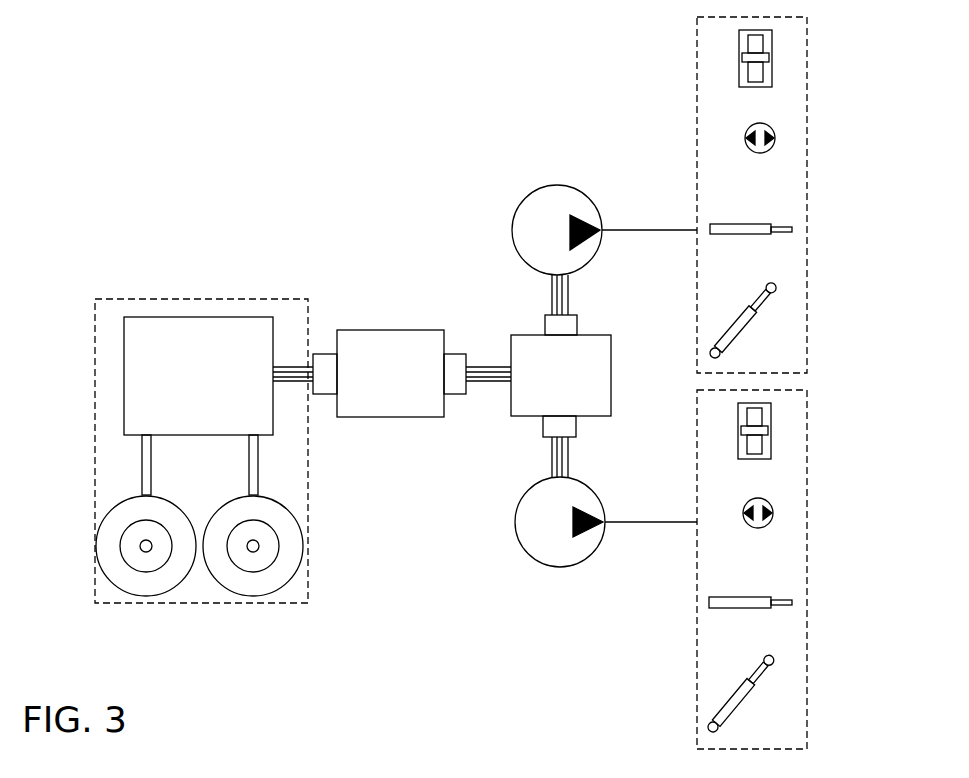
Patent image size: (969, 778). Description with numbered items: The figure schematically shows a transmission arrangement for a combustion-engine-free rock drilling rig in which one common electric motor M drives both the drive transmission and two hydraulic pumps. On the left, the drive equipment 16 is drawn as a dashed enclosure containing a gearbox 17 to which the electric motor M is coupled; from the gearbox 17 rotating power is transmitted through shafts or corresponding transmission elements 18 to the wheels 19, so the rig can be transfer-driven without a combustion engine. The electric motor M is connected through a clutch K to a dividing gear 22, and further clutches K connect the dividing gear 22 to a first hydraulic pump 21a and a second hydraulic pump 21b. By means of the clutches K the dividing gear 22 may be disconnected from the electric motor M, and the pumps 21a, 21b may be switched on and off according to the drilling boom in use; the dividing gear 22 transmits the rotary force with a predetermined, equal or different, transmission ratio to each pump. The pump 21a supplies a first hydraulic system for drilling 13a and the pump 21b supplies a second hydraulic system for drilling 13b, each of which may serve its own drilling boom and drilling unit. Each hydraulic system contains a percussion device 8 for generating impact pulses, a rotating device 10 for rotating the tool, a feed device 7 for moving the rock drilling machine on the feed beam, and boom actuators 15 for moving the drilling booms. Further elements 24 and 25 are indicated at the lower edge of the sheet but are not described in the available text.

The drive equipment 16 is at (172, 298).
The gearbox 17 is at (213, 389).
The shafts / legs of drive unit 18 is at (255, 477).
The wheels 19 is at (251, 582).
The electric motor M is at (401, 389).
The clutches K is at (325, 367).
The dividing gear 22 is at (576, 391).
The hydraulic pump 21a is at (542, 220).
The hydraulic pump 21b is at (548, 538).
The hydraulic system for drilling 13a is at (697, 82).
The hydraulic system for drilling 13b is at (697, 680).
The percussion device 8 is at (758, 48).
The rotating device 10 is at (762, 128).
The feed device 7 is at (755, 230).
The boom actuators 15 is at (748, 323).
The component 24 (cut off) 24 is at (530, 777).
The component 25 (cut off) 25 is at (236, 769).